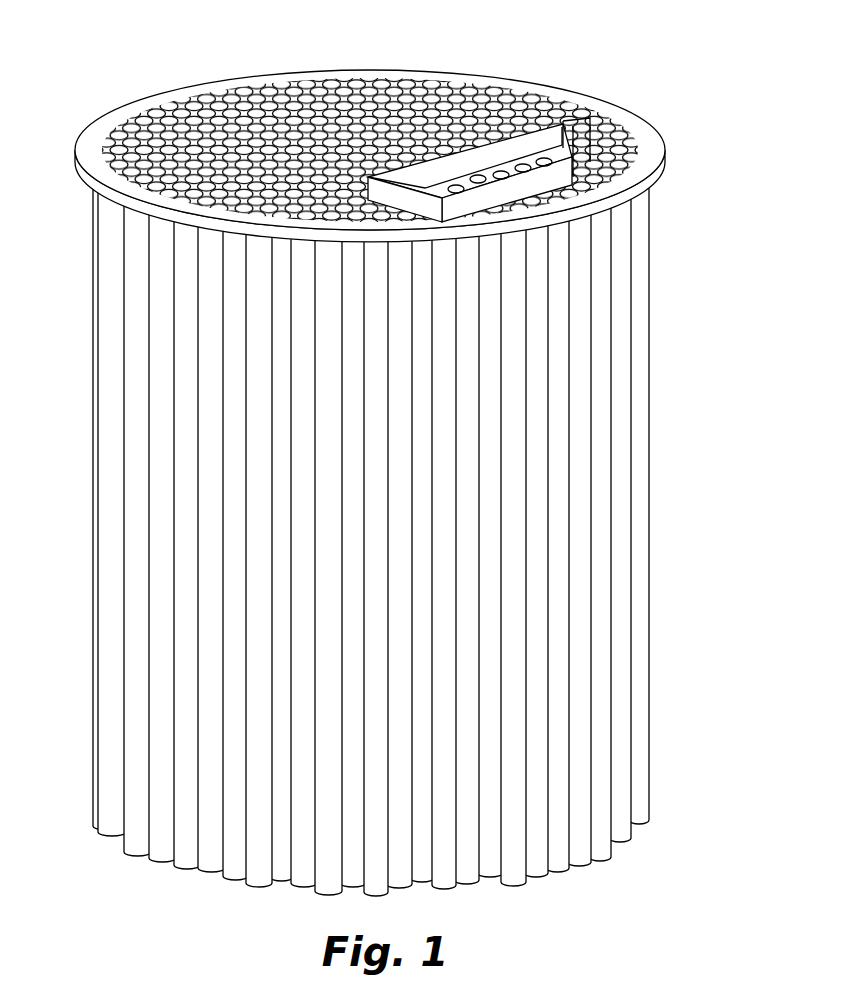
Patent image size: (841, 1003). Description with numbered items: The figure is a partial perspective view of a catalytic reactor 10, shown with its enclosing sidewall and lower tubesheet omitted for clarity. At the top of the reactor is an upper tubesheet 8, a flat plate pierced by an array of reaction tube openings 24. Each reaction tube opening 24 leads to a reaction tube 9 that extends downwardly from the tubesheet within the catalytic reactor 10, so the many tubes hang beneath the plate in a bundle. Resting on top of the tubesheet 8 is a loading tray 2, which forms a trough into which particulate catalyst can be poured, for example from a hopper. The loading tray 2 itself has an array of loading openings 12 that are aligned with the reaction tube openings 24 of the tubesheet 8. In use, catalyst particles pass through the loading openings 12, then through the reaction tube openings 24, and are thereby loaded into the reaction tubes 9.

The catalytic reactor 10 is at (377, 451).
The upper tubesheet 8 is at (370, 124).
The reaction tube openings 24 is at (212, 122).
The reaction tube 9 is at (618, 750).
The loading tray 2 is at (544, 161).
The loading openings 12 is at (478, 178).